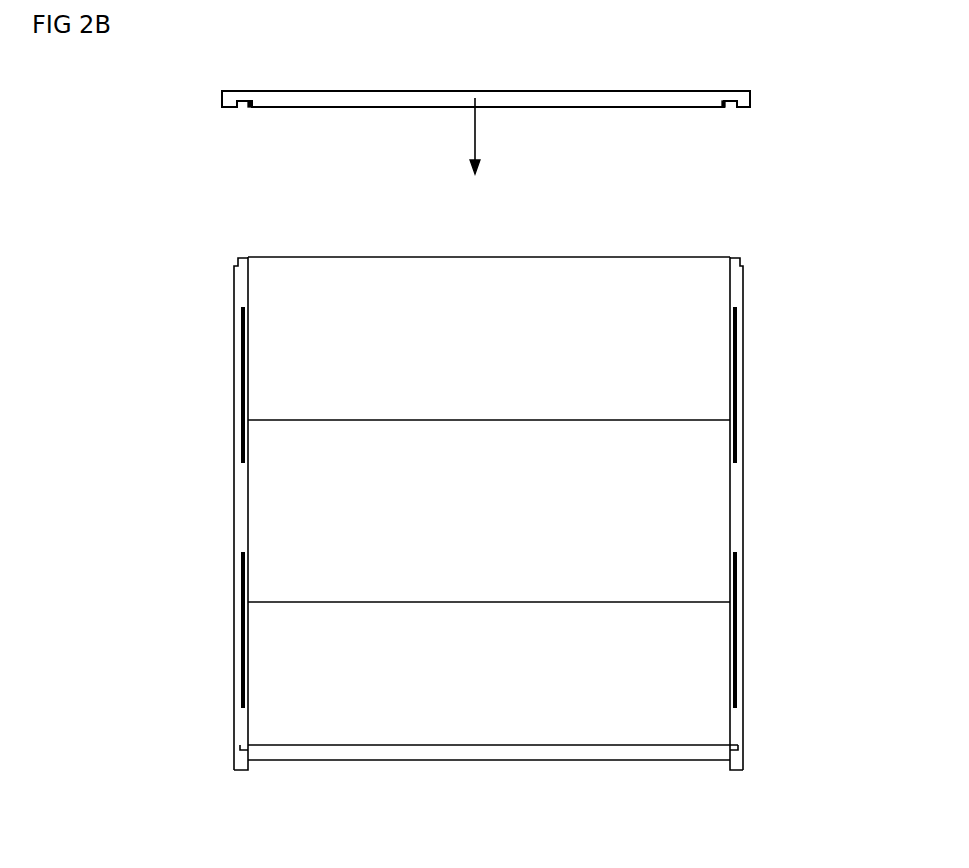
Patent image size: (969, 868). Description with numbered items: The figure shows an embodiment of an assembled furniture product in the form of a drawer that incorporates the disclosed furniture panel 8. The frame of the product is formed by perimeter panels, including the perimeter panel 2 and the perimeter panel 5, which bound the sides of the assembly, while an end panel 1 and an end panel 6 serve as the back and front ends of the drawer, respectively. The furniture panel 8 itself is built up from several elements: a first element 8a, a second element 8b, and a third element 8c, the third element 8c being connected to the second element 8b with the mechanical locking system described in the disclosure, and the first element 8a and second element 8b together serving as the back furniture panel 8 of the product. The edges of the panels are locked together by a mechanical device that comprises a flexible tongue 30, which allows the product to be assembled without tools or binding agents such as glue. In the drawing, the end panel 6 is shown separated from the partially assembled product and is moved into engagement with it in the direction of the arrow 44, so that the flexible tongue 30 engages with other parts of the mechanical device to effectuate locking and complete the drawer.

The end panel 1 is at (532, 755).
The perimeter panel 2 is at (243, 512).
The perimeter panel 5 is at (738, 517).
The end panel 6 is at (533, 100).
The furniture panel 8 is at (489, 422).
The first element 8a is at (489, 380).
The second element 8b is at (489, 556).
The third element 8c is at (492, 675).
The flexible tongue 30 is at (248, 258).
The arrow 44 is at (495, 136).